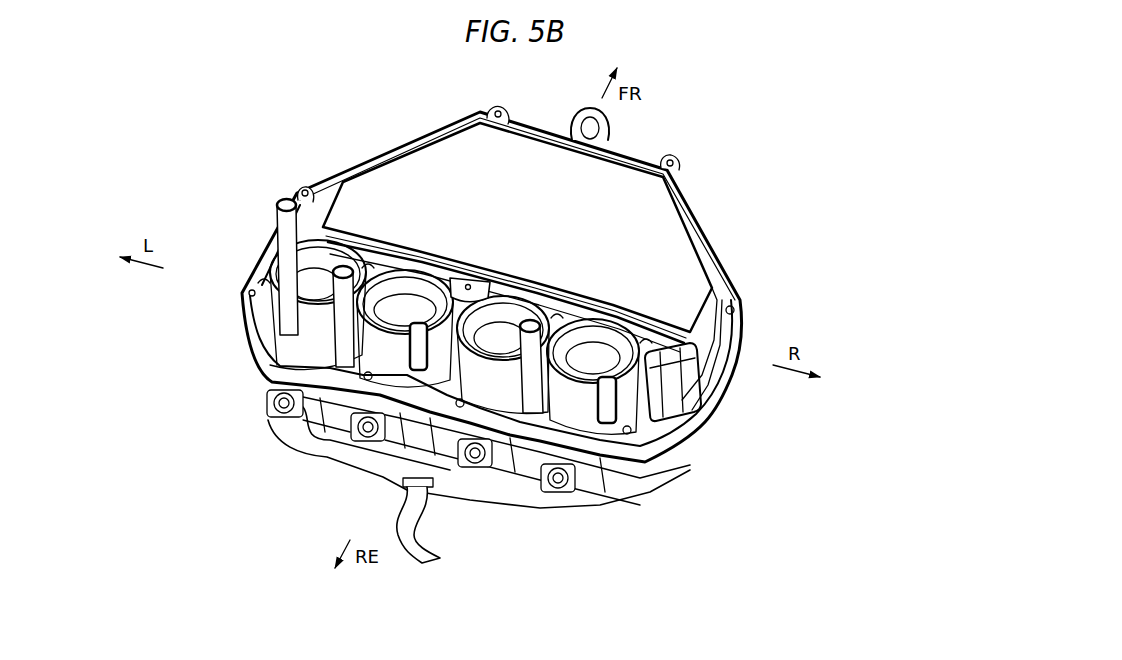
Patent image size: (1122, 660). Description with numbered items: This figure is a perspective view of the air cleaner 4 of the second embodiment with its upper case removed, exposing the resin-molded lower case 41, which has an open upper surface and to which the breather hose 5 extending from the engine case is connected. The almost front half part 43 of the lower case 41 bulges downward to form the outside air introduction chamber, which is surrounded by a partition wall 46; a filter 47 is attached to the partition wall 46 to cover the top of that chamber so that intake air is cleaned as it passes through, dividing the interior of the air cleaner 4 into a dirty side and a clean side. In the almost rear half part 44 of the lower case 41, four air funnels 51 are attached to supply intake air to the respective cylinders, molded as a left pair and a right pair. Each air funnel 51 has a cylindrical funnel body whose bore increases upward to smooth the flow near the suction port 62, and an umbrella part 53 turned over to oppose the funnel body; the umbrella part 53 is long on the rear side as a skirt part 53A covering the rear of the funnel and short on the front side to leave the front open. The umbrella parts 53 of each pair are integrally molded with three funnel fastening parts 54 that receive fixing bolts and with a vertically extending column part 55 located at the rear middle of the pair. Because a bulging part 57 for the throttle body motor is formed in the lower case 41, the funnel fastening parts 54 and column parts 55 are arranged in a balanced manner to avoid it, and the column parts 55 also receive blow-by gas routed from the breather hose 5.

The air cleaner 4 is at (656, 137).
The breather hose 5 is at (420, 537).
The lower case 41 is at (720, 243).
The front half part 43 is at (526, 284).
The rear half part 44 is at (707, 390).
The partition wall 46 is at (715, 300).
The filter 47 is at (663, 213).
The air funnel 51 is at (340, 223).
The umbrella part 53 is at (273, 253).
The skirt part 53A is at (292, 352).
The funnel fastening part 54 is at (262, 279).
The column part 55 is at (277, 368).
The bulging part 57 is at (445, 335).
The suction port 62 is at (282, 220).